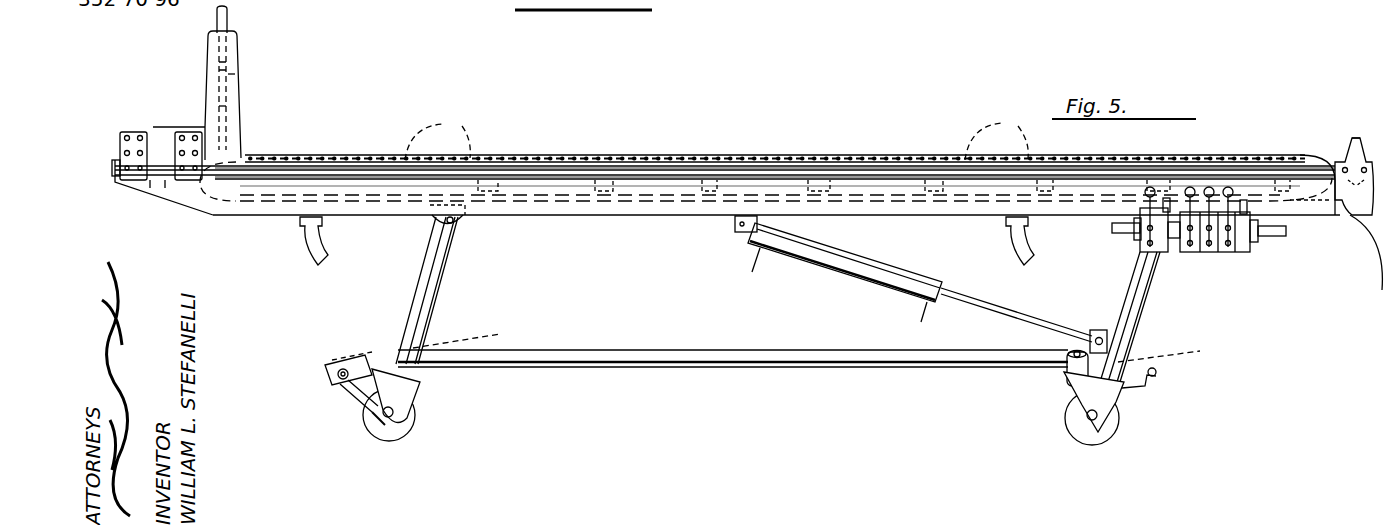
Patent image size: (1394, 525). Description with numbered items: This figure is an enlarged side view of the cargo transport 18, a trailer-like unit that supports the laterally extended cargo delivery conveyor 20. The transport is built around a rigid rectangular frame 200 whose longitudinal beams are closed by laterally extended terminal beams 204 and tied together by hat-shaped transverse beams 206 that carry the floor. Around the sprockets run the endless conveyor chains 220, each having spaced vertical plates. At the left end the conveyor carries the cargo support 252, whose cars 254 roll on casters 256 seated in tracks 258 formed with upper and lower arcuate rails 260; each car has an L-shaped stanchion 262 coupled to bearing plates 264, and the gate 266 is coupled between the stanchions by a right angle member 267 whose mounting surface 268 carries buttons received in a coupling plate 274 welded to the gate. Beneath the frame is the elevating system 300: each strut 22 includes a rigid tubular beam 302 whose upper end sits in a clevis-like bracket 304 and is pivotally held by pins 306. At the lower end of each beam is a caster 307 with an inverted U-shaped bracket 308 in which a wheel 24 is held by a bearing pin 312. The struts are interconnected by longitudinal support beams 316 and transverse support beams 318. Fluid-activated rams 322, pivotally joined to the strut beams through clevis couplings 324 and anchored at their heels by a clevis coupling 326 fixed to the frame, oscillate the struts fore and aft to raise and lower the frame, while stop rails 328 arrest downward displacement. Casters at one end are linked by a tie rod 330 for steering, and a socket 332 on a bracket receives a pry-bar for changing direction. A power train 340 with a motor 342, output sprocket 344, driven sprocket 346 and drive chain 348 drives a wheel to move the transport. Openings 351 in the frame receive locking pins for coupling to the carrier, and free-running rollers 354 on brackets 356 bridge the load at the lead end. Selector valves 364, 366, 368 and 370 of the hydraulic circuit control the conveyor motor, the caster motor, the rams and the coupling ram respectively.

The cargo transport 18 is at (880, 148).
The cargo delivery conveyor 20 is at (607, 148).
The struts 22 is at (445, 292).
The wheel 24 is at (408, 432).
The frame 200 is at (608, 222).
The terminal beams 204 is at (238, 198).
The transverse beams 206 is at (847, 154).
The conveyor chain 220 is at (752, 158).
The cargo support 252 is at (236, 22).
The cars 254 is at (155, 125).
The casters 256 is at (176, 183).
The tracks 258 is at (540, 162).
The arcuate rails 260 is at (668, 178).
The stanchion 262 is at (228, 99).
The bearing plates 264 is at (172, 147).
The gate 266 is at (214, 22).
The right angle member 267 is at (228, 78).
The mounting surface 268 is at (222, 66).
The coupling plate 274 is at (222, 106).
The elevating system 300 is at (480, 320).
The tubular beam 302 is at (425, 287).
The clevis-like bracket 304 is at (440, 218).
The pins 306 is at (462, 222).
The caster 307 is at (420, 418).
The U-shaped bracket 308 is at (412, 397).
The bearing pin 312 is at (390, 420).
The support beams 316 is at (728, 368).
The support beams 318 is at (828, 341).
The rams 322 is at (860, 262).
The clevis couplings 324 is at (1120, 332).
The clevis coupling 326 is at (752, 232).
The stop rails 328 is at (312, 255).
The tie rod 330 is at (1162, 372).
The socket 332 is at (1070, 362).
The power train 340 is at (368, 360).
The motor 342 is at (325, 360).
The output sprocket 344 is at (336, 380).
The driven sprocket 346 is at (378, 432).
The drive chain 348 is at (358, 398).
The openings 351 is at (1354, 208).
The rollers 354 is at (1355, 148).
The brackets 356 is at (1371, 258).
The two-way selector valve 364 is at (1210, 255).
The two-way selector valve 366 is at (1190, 255).
The ram selector valve 368 is at (1235, 255).
The ram selector valve 370 is at (1140, 240).